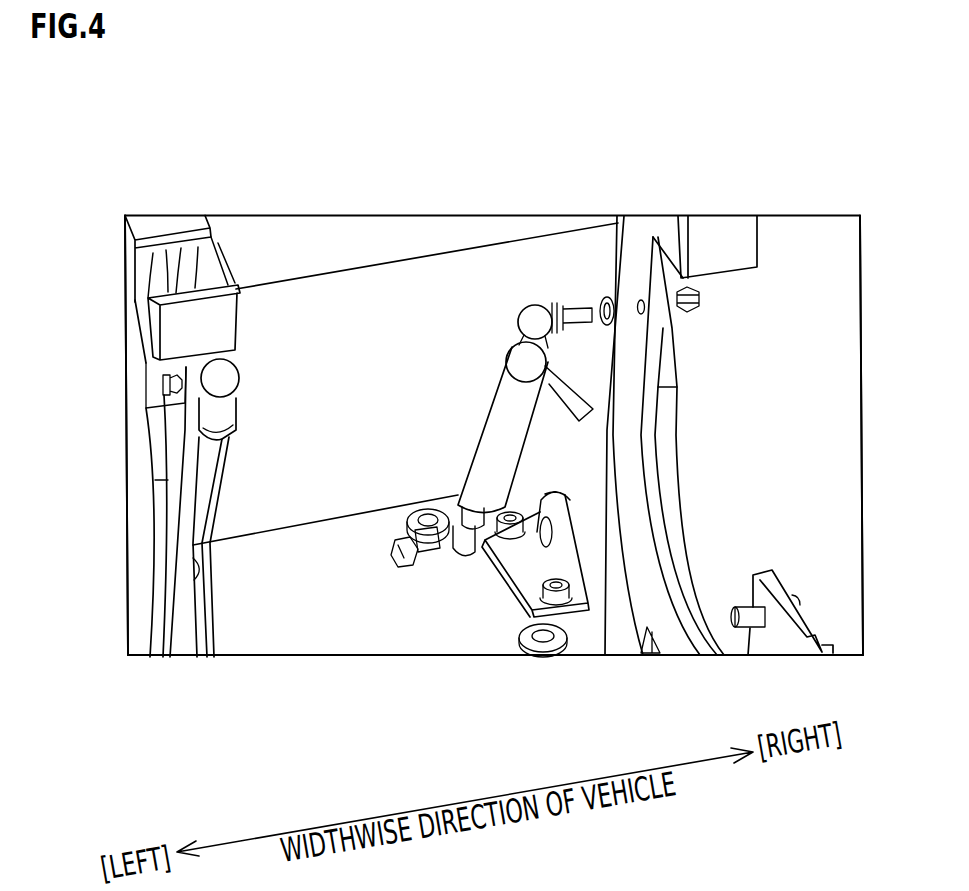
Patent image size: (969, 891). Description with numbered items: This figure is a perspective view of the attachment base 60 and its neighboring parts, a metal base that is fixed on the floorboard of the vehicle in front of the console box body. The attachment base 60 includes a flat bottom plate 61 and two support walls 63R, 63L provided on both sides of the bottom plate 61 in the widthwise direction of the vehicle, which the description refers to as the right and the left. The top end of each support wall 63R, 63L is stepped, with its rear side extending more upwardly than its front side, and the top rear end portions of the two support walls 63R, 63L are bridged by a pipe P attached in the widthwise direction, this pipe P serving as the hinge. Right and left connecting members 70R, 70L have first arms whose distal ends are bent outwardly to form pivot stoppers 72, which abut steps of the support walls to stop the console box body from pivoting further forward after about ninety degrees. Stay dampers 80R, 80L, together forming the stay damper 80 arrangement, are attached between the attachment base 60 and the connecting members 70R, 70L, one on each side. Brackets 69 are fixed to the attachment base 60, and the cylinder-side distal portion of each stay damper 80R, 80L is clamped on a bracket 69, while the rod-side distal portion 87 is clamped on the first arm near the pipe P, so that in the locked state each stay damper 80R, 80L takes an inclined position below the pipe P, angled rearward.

The attachment base 60 is at (365, 455).
The bottom plate 61 is at (343, 626).
The left support wall 63L is at (135, 541).
The right support wall 63R is at (592, 500).
The bracket 69 is at (518, 571).
The left connecting member 70L is at (180, 634).
The right connecting member 70R is at (633, 257).
The pivot stopper 72 is at (153, 222).
The stay damper 80 is at (329, 462).
The left stay damper 80L is at (207, 458).
The right stay damper 80R is at (497, 418).
The rod-side distal portion 87 is at (222, 407).
The pipe P is at (404, 240).